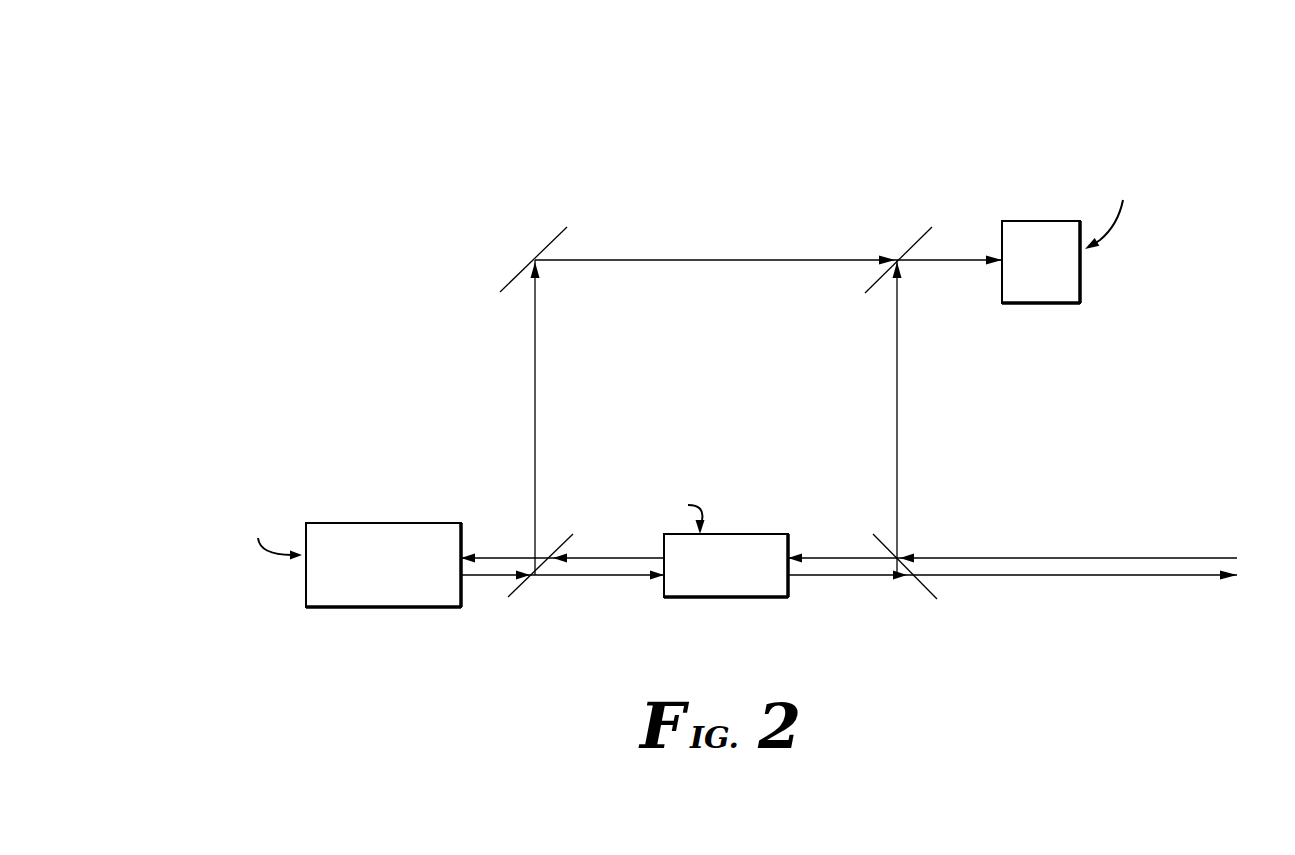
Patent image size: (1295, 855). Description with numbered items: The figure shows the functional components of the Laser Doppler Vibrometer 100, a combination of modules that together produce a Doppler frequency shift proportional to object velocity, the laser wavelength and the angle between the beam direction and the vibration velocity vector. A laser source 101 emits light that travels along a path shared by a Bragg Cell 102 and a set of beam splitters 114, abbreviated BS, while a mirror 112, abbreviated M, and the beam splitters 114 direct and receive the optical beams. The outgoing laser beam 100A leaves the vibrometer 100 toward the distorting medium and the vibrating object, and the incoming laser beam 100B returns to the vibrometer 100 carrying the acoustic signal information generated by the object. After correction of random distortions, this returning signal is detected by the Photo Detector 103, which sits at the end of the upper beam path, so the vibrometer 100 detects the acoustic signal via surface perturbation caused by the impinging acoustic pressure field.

The Laser Doppler Vibrometer 100 is at (326, 155).
The outgoing laser beam 100A is at (1185, 577).
The incoming laser beam 100B is at (1158, 558).
The laser source 101 is at (382, 523).
The Bragg Cell 102 is at (725, 534).
The Photo Detector 103 is at (1040, 221).
The mirror 112 is at (533, 226).
The beam splitters 114 is at (892, 229).